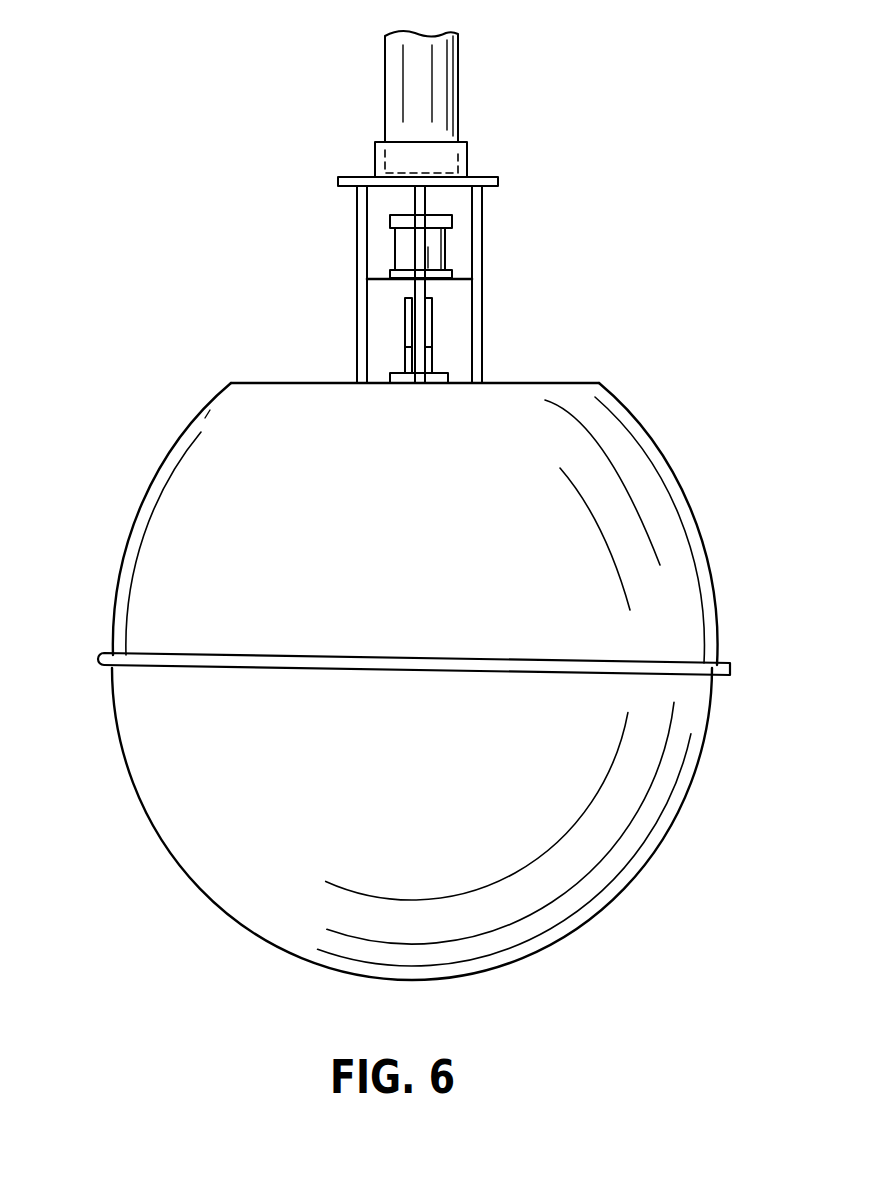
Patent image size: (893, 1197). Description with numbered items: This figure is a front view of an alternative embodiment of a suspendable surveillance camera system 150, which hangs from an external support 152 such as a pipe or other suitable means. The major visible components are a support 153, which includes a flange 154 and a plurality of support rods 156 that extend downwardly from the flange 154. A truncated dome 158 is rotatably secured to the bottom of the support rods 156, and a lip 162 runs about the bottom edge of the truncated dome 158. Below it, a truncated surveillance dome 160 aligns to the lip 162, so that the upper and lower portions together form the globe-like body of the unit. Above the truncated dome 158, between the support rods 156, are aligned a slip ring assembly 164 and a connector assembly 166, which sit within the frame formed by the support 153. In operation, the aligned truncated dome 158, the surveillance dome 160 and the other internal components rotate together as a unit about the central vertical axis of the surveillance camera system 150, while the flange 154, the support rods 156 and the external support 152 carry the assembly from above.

The surveillance camera system 150 is at (397, 505).
The external support 152 is at (441, 87).
The support 153 is at (396, 207).
The flange 154 is at (473, 175).
The support rods 156 is at (482, 222).
The truncated dome 158 is at (160, 468).
The surveillance dome 160 is at (142, 767).
The lip 162 is at (97, 660).
The slip ring assembly 164 is at (433, 325).
The connector assembly 166 is at (443, 250).